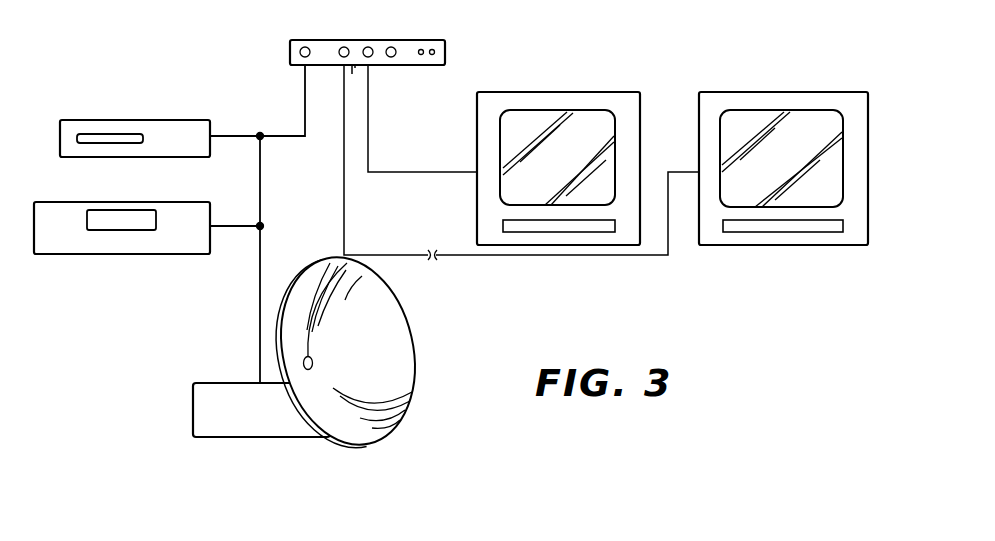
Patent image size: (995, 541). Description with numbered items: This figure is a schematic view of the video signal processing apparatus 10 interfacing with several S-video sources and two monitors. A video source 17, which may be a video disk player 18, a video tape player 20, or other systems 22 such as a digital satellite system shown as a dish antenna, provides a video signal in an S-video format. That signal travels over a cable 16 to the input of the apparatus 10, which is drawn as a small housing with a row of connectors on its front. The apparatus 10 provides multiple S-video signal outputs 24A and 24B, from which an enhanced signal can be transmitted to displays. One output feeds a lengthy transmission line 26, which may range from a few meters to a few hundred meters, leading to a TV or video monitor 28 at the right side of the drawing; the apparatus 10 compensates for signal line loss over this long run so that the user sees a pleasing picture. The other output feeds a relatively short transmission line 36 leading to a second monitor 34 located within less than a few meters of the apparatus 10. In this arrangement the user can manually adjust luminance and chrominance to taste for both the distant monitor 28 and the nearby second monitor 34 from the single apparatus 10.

The video signal processing apparatus 10 is at (437, 36).
The cable 16 is at (305, 88).
The video source 17 is at (100, 102).
The video disk player 18 is at (188, 119).
The video tape player 20 is at (193, 202).
The other systems 22 is at (213, 383).
The S-video signal output 24A is at (355, 66).
The S-video signal output 24B is at (393, 99).
The transmission line 26 is at (478, 258).
The TV or video monitor 28 is at (790, 92).
The second monitor 34 is at (595, 92).
The transmission line 36 is at (392, 172).